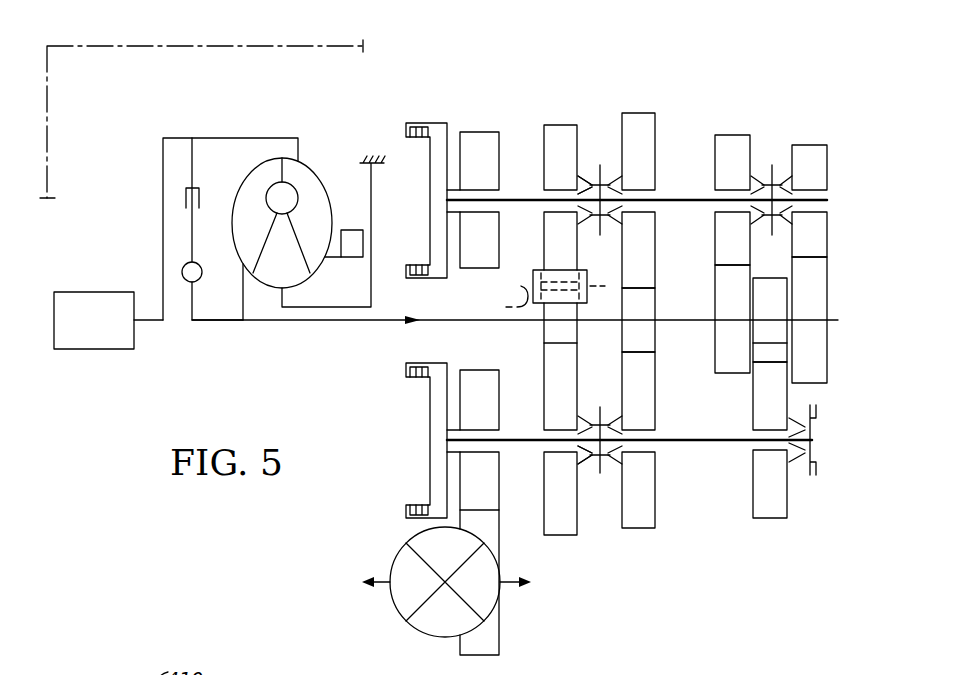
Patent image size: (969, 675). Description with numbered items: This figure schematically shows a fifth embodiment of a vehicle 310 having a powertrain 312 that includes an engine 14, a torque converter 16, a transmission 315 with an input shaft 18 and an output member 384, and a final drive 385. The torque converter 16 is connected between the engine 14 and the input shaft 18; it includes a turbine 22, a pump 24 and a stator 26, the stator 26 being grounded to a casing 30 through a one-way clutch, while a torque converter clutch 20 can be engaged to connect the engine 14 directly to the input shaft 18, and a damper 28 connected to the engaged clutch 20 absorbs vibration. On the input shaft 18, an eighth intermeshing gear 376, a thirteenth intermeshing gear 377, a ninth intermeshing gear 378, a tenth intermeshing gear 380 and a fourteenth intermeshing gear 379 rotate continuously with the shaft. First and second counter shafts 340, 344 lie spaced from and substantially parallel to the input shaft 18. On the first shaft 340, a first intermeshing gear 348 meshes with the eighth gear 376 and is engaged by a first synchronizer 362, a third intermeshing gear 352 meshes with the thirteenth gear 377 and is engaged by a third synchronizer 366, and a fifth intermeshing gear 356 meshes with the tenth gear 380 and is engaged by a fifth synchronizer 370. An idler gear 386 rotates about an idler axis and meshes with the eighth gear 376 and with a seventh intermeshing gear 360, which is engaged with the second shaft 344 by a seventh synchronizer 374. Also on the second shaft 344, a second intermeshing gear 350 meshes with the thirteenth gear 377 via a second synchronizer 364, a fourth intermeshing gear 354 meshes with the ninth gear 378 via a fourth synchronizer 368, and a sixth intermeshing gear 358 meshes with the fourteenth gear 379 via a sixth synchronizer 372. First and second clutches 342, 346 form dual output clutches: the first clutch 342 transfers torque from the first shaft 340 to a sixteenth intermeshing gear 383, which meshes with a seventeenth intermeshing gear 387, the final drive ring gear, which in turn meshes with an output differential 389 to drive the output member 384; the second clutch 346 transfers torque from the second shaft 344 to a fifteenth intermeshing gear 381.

The engine 14 is at (96, 349).
The torque converter 16 is at (307, 126).
The input shaft 18 is at (348, 322).
The torque converter clutch 20 is at (184, 180).
The turbine 22 is at (251, 159).
The pump 24 is at (312, 166).
The stator 26 is at (262, 289).
The damper 28 is at (198, 282).
The casing 30 is at (380, 165).
The vehicle 310 is at (156, 46).
The powertrain 312 is at (165, 384).
The transmission 315 is at (693, 56).
The first counter shaft 340 is at (705, 440).
The first clutch 342 is at (405, 488).
The second counter shaft 344 is at (689, 200).
The second clutch 346 is at (406, 120).
The first intermeshing gear 348 is at (544, 513).
The second intermeshing gear 350 is at (655, 146).
The third intermeshing gear 352 is at (657, 529).
The fourth intermeshing gear 354 is at (713, 258).
The fifth intermeshing gear 356 is at (753, 508).
The sixth intermeshing gear 358 is at (827, 144).
The seventh intermeshing gear 360 is at (543, 148).
The first synchronizer 362 is at (587, 475).
The second synchronizer 364 is at (613, 166).
The third synchronizer 366 is at (613, 476).
The fourth synchronizer 368 is at (753, 167).
The fifth synchronizer 370 is at (795, 471).
The sixth synchronizer 372 is at (784, 166).
The seventh synchronizer 374 is at (585, 164).
The eighth intermeshing gear 376 is at (540, 334).
The thirteenth intermeshing gear 377 is at (657, 306).
The ninth intermeshing gear 378 is at (712, 362).
The fourteenth intermeshing gear 379 is at (793, 275).
The tenth intermeshing gear 380 is at (753, 343).
The fifteenth intermeshing gear 381 is at (499, 150).
The sixteenth intermeshing gear 383 is at (499, 497).
The output member 384 is at (375, 580).
The final drive 385 is at (418, 642).
The idler gear 386 is at (534, 270).
The seventeenth intermeshing gear 387 is at (500, 628).
The output differential 389 is at (395, 607).